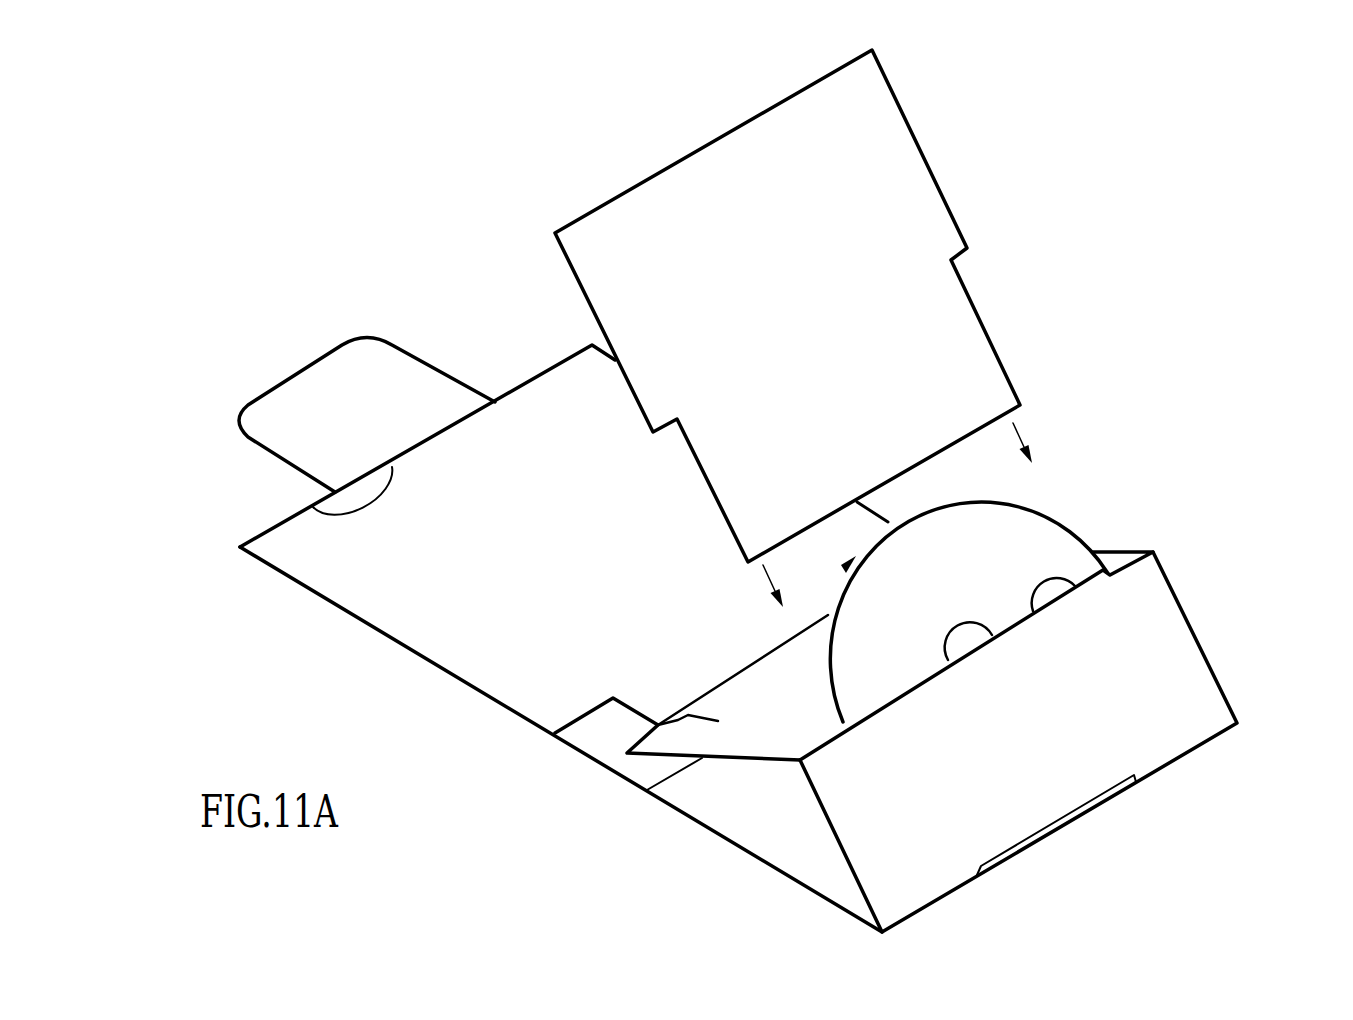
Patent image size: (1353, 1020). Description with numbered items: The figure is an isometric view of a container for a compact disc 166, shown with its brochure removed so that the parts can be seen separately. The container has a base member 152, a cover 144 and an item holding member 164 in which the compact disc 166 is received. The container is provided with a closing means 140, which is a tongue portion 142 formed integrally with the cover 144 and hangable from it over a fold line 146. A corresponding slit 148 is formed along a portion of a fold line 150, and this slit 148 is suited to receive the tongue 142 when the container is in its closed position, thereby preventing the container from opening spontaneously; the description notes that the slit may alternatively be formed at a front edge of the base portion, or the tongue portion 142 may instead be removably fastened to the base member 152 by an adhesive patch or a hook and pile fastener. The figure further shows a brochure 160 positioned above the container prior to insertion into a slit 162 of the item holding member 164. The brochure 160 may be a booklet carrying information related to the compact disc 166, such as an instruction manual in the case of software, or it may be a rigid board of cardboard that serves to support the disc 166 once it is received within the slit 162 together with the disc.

The closing means 140 is at (471, 340).
The tongue portion 142 is at (333, 405).
The cover 144 is at (552, 547).
The fold line 146 is at (313, 507).
The slit 148 is at (1047, 835).
The fold line 150 is at (1197, 752).
The base member 152 is at (748, 855).
The brochure 160 is at (928, 220).
The slit 162 is at (1072, 592).
The item holding member 164 is at (1149, 520).
The compact disc 166 is at (965, 583).